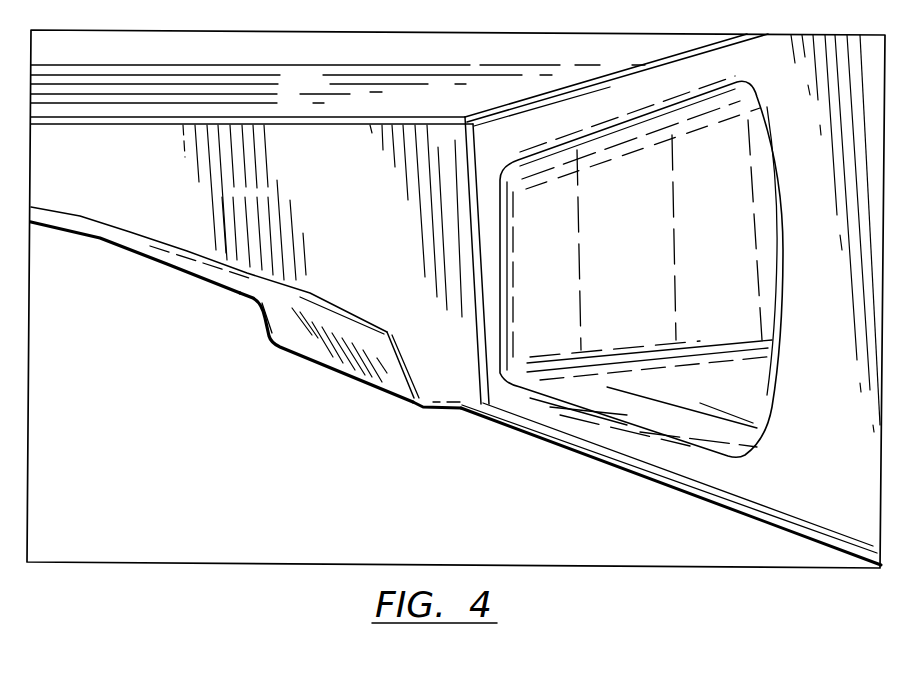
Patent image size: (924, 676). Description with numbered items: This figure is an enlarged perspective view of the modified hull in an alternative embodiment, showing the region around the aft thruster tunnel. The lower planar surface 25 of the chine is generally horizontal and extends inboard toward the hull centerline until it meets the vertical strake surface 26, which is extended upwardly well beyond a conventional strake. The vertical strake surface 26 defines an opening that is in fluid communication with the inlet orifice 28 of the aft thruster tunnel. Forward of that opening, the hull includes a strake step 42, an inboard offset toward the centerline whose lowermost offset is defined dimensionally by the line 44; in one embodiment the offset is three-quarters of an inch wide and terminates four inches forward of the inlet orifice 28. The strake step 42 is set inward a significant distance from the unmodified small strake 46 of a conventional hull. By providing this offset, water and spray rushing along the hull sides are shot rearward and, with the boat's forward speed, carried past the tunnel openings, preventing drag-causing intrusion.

The lower planar surface of the chine 25 is at (309, 97).
The vertical strake surface 26 is at (829, 490).
The inlet orifice 28 is at (635, 280).
The strake step 42 is at (432, 360).
The line 44 is at (443, 412).
The unmodified small strake 46 is at (293, 335).